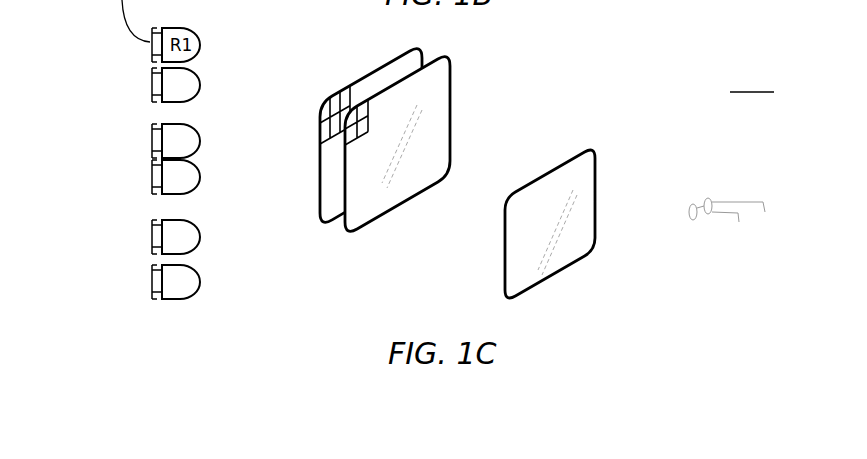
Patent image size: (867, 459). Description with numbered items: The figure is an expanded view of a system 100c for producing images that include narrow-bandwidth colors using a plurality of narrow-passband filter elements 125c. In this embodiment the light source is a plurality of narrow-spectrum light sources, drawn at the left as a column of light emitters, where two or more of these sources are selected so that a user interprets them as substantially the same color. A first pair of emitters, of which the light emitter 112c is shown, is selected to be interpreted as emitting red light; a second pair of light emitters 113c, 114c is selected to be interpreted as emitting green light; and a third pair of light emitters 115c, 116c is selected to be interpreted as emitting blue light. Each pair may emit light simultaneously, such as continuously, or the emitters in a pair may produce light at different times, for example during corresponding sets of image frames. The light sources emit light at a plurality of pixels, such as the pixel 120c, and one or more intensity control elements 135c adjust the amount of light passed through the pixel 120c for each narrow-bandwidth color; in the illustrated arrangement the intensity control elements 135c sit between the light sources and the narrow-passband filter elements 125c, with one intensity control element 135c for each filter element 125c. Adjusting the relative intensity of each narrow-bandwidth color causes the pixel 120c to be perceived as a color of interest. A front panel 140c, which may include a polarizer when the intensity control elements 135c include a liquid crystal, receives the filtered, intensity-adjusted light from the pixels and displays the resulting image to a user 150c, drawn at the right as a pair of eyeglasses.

The system 100c is at (752, 82).
The light emitter 112c is at (150, 88).
The light emitter 113c is at (150, 137).
The light emitter 114c is at (150, 175).
The light emitter 115c is at (150, 238).
The light emitter 116c is at (150, 282).
The pixel 120c is at (350, 88).
The narrow-passband filter element 125c is at (322, 145).
The intensity control element 135c is at (317, 122).
The front panel 140c is at (572, 148).
The user 150c is at (708, 197).